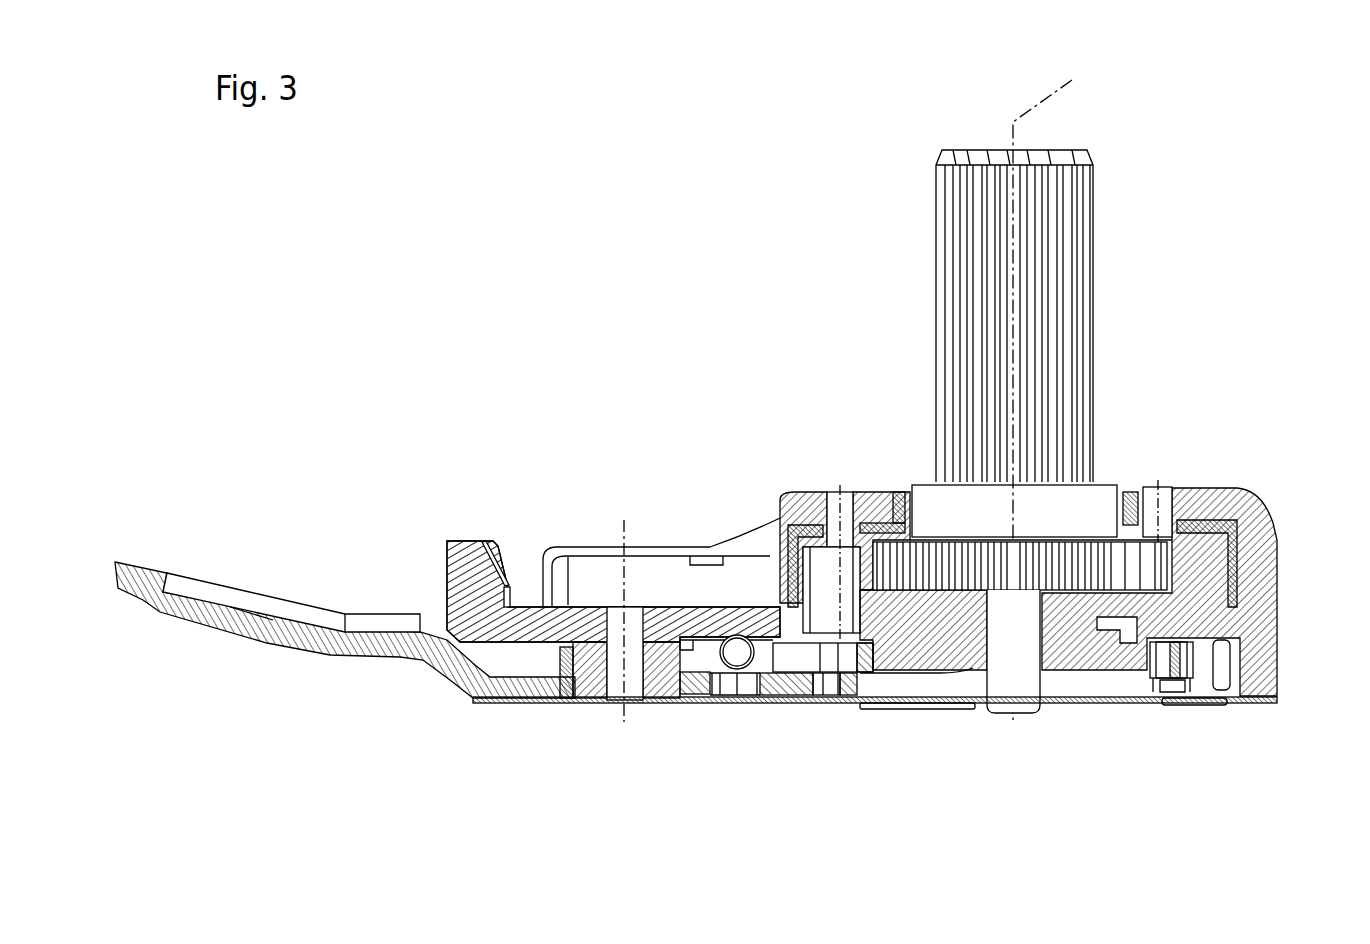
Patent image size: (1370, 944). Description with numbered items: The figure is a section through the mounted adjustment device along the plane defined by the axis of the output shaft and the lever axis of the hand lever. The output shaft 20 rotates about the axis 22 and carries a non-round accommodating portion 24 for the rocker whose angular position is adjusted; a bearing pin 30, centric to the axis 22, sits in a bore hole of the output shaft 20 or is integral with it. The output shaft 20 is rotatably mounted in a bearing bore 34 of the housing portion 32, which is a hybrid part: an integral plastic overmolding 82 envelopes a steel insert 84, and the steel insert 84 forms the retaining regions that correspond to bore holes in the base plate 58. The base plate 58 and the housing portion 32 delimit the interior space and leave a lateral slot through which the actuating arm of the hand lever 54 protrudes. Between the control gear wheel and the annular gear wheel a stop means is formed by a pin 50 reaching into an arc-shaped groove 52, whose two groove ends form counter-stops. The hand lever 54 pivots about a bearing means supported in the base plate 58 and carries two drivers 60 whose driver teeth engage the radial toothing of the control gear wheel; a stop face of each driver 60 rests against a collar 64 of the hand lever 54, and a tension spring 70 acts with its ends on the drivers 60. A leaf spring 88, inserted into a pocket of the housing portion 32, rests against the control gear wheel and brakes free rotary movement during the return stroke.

The output shaft 20 is at (1098, 495).
The axis 22 is at (1059, 385).
The non-round accommodating portion 24 is at (1080, 218).
The bearing pin 30 is at (1007, 702).
The housing portion 32 is at (797, 473).
The bearing bore 34 is at (927, 483).
The pin 50 is at (1113, 630).
The arc-shaped groove 52 is at (1137, 627).
The hand lever 54 is at (300, 655).
The base plate 58 is at (662, 703).
The driver 60 is at (797, 660).
The collar 64 is at (560, 693).
The tension spring 70 is at (738, 669).
The plastic overmolding 82 is at (465, 578).
The steel insert 84 is at (890, 497).
The leaf spring 88 is at (1173, 668).